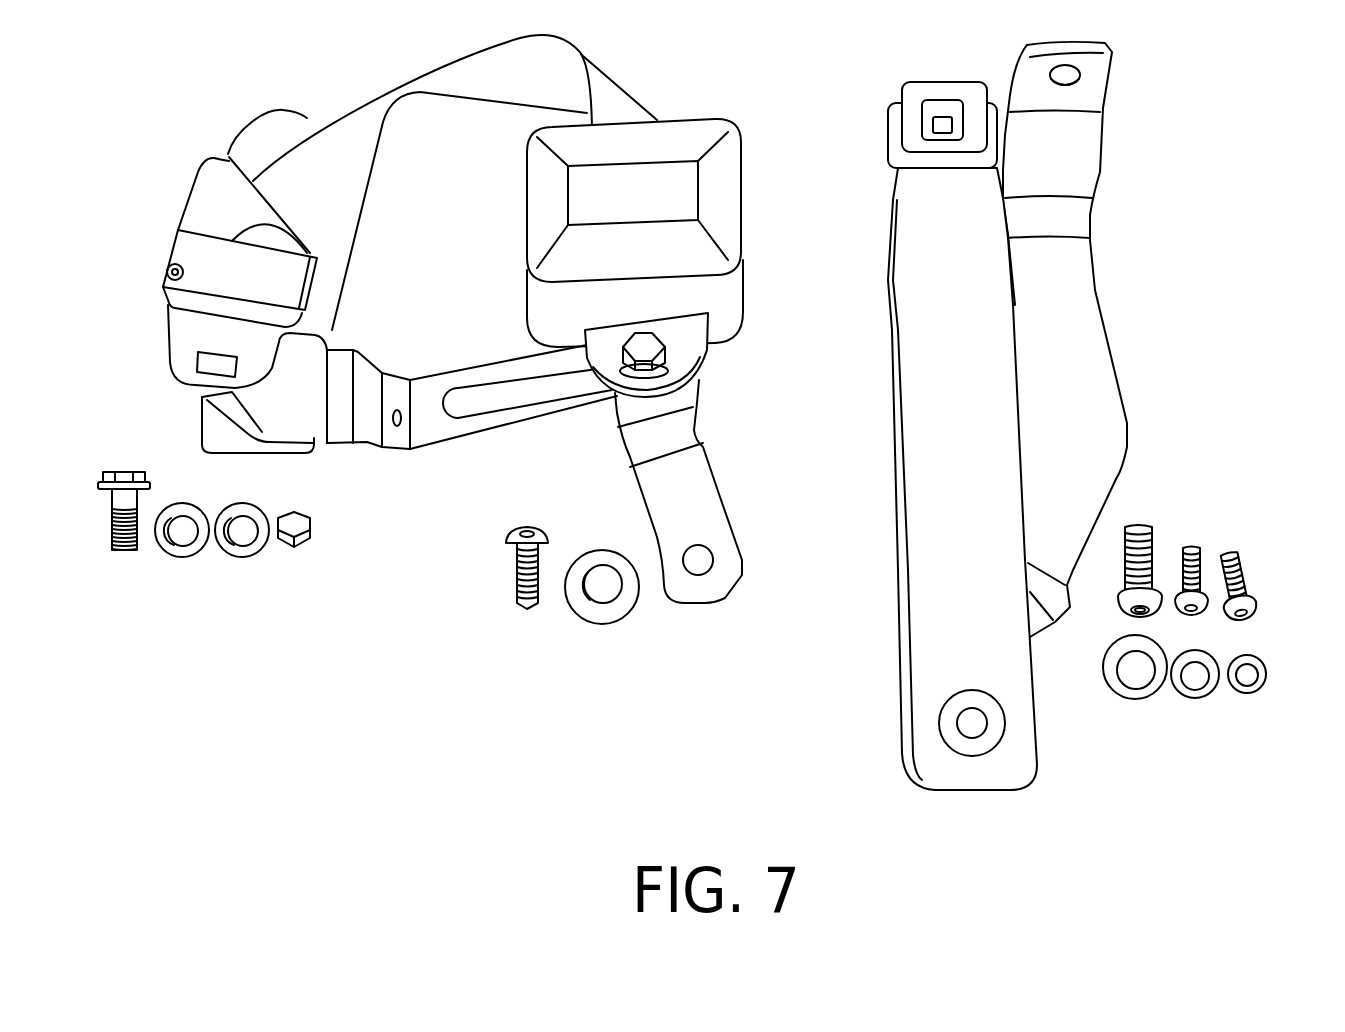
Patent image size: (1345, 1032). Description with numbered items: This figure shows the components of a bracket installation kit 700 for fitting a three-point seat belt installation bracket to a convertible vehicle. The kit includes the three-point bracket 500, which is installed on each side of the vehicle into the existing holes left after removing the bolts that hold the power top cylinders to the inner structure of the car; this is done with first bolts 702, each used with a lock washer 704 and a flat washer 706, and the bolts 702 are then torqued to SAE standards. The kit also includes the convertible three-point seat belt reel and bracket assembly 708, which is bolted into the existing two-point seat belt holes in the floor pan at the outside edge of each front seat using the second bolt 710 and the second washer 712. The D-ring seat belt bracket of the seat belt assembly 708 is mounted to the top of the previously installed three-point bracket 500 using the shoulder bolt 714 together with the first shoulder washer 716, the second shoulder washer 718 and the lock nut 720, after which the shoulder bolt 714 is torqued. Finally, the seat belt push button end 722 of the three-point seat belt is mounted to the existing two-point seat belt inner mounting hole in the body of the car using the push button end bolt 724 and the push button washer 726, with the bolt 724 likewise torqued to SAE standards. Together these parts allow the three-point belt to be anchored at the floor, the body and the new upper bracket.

The bracket installation kit 700 is at (407, 708).
The convertible three-point seat belt reel and bracket assembly 708 is at (247, 131).
The second bolt 710 is at (527, 609).
The second washer 712 is at (606, 607).
The shoulder bolt 714 is at (122, 553).
The first shoulder washer 716 is at (178, 558).
The second shoulder washer 718 is at (243, 553).
The lock nut 720 is at (313, 532).
The three-point bracket 500 is at (1100, 213).
The seat belt push button end 722 is at (900, 570).
The push button end bolt 724 is at (1141, 525).
The first bolts 702 is at (1238, 550).
The lock washer 704 is at (1254, 693).
The flat washer 706 is at (1192, 697).
The push button washer 726 is at (1134, 700).